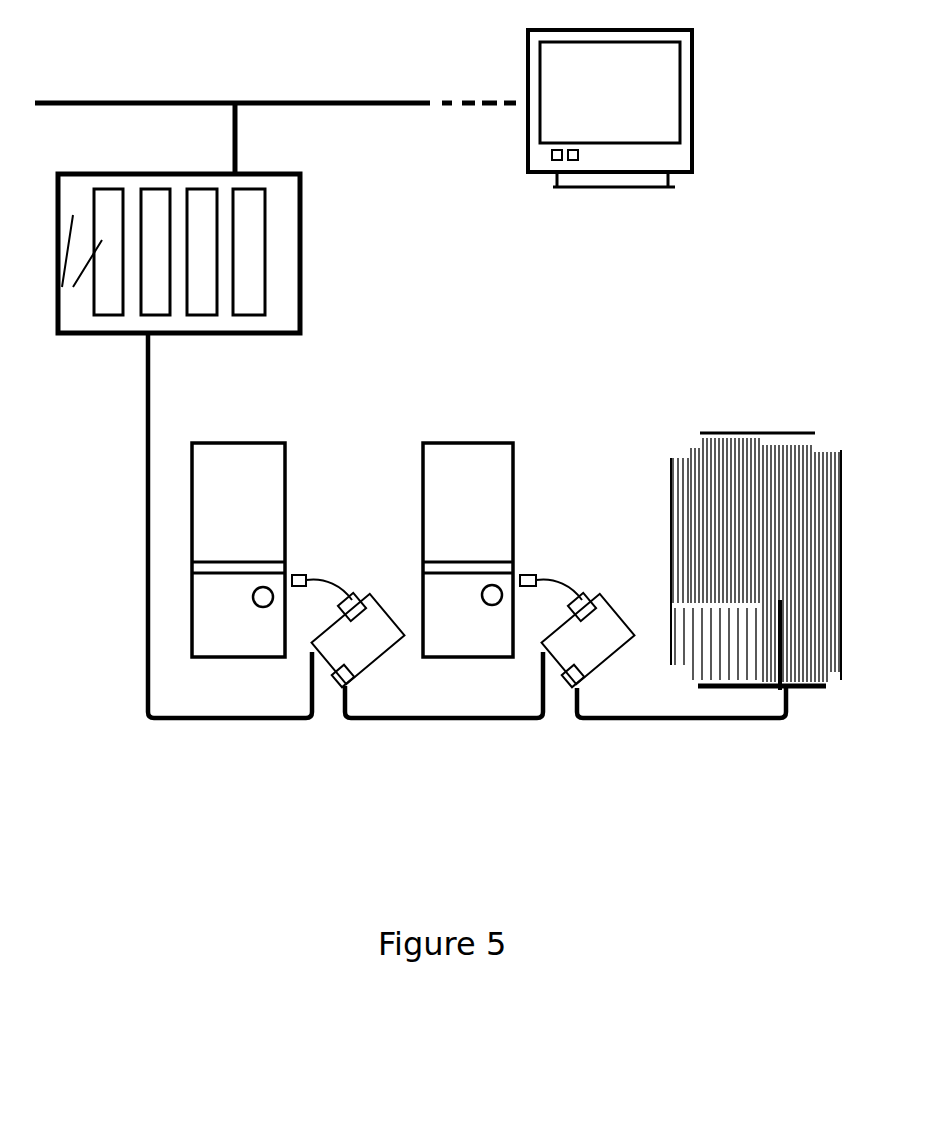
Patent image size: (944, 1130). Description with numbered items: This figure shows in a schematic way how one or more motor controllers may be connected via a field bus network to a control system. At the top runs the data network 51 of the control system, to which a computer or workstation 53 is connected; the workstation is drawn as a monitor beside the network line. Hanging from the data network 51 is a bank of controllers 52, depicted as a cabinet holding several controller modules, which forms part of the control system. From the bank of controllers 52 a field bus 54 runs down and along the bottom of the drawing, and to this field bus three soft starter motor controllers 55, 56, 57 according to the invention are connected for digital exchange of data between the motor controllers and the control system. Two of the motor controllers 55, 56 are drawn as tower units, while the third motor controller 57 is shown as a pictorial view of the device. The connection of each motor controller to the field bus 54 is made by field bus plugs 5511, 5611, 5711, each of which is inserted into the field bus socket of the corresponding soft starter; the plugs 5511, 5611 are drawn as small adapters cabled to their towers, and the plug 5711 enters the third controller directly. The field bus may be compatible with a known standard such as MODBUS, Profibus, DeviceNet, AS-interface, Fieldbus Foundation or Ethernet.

The data network 51 is at (275, 62).
The bank of controllers 52 is at (158, 300).
The computer or workstation 53 is at (647, 113).
The field bus 54 is at (137, 485).
The soft starter motor controller 55 is at (282, 435).
The soft starter motor controller 56 is at (485, 435).
The soft starter motor controller 57 is at (780, 435).
The field bus plug 5511 is at (343, 647).
The field bus plug 5611 is at (568, 643).
The field bus plug 5711 is at (782, 653).